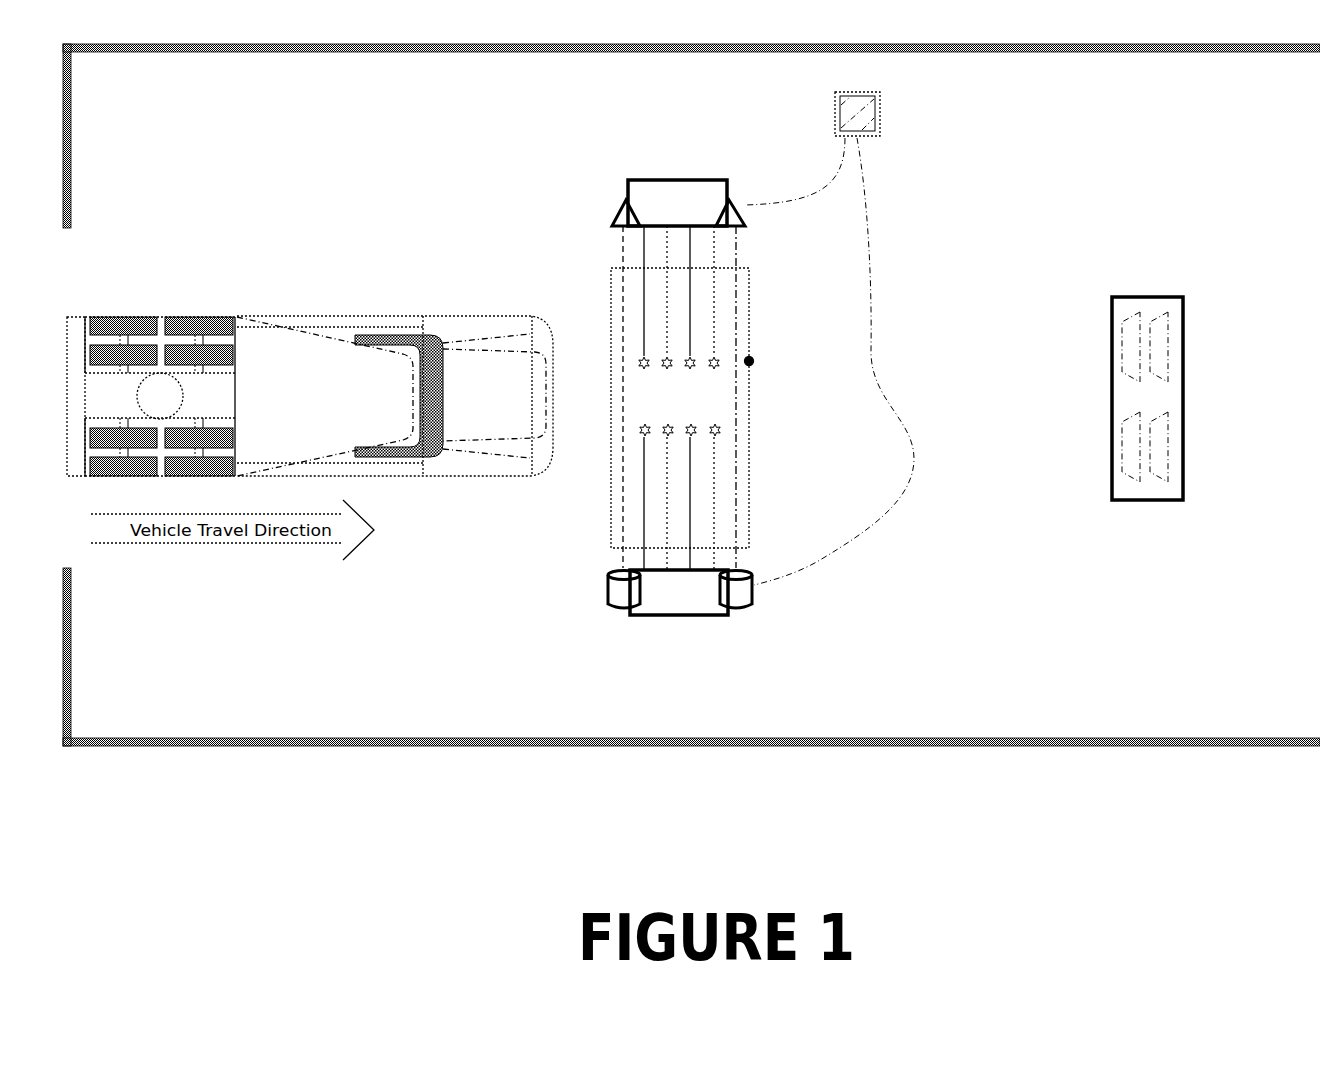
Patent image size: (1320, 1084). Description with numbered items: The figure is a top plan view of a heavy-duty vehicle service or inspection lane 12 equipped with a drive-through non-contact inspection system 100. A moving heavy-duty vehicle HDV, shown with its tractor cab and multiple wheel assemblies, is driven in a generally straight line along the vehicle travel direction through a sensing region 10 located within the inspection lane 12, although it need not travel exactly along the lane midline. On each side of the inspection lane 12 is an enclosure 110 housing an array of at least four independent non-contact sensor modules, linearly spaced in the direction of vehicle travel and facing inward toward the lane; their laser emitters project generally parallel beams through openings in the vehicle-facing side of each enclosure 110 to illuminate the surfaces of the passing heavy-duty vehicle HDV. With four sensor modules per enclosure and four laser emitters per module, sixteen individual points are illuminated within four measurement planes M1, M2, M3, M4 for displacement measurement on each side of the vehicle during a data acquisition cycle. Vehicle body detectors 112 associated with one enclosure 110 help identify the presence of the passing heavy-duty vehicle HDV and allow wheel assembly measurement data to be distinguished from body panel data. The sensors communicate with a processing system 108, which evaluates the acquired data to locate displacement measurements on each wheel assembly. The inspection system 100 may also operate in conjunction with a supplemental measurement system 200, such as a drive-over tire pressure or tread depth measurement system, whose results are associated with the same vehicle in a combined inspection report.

The sensing region 10 is at (749, 361).
The heavy-duty vehicle service or inspection lane 12 is at (312, 638).
The drive-through non-contact inspection system 100 is at (556, 220).
The processing system 108 is at (850, 92).
The enclosure 110 is at (680, 180).
The vehicle body detector 112 is at (620, 592).
The supplemental measurement system 200 is at (1103, 285).
The heavy-duty vehicle HDV is at (254, 356).
The first measurement plane M1 is at (643, 503).
The second measurement plane M2 is at (666, 505).
The third measurement plane M3 is at (690, 487).
The fourth measurement plane M4 is at (716, 452).